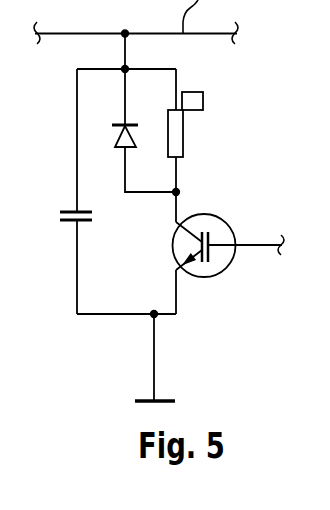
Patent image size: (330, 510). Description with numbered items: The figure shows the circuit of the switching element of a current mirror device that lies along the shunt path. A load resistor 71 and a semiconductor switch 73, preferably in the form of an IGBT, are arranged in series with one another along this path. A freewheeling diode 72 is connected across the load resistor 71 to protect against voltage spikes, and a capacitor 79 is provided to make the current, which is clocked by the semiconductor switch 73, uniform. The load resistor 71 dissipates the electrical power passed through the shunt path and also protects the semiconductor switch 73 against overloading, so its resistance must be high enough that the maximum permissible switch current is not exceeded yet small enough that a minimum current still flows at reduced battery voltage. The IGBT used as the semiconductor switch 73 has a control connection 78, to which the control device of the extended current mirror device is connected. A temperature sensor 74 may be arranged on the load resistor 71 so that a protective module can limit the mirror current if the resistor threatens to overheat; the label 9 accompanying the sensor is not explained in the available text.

The temperature sensor 9 is at (192, 98).
The load resistor 71 is at (183, 132).
The freewheeling diode 72 is at (124, 149).
The semiconductor switch 73 is at (228, 222).
The temperature sensor 74 is at (203, 102).
The control connection 78 is at (260, 245).
The capacitor 79 is at (76, 210).